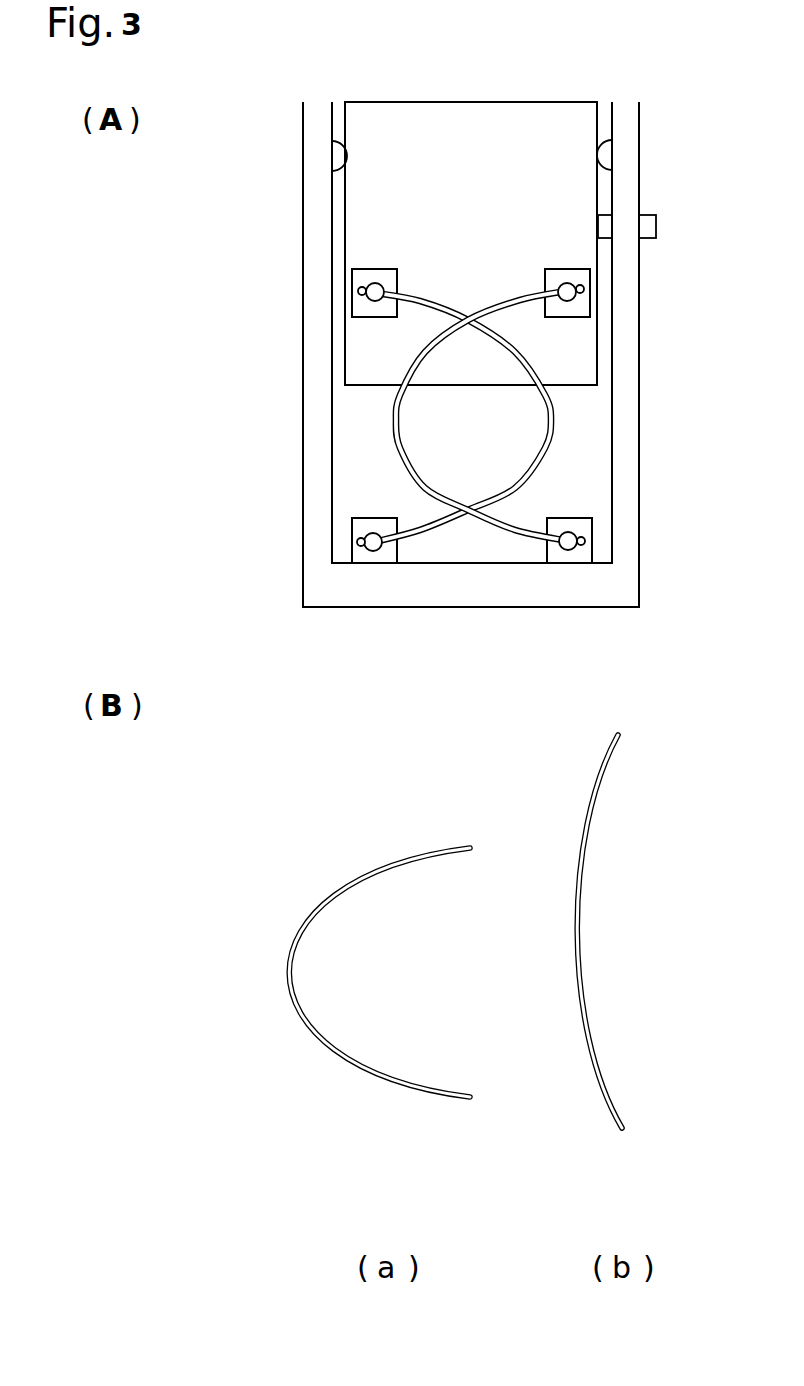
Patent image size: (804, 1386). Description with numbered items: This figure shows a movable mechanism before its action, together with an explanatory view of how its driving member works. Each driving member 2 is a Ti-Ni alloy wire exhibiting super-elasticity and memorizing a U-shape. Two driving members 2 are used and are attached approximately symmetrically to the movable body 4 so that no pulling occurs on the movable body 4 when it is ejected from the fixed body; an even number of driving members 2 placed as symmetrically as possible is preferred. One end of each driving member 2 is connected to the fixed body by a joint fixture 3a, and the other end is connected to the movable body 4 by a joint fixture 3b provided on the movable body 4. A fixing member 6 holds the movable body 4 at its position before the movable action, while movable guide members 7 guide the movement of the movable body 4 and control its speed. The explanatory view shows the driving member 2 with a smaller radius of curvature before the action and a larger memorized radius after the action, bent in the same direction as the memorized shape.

The driving member 2 is at (396, 418).
The joint fixture 3a is at (357, 541).
The joint fixture 3b is at (357, 293).
The movable body 4 is at (408, 206).
The fixing member 6 is at (657, 227).
The movable guide member 7 is at (338, 154).